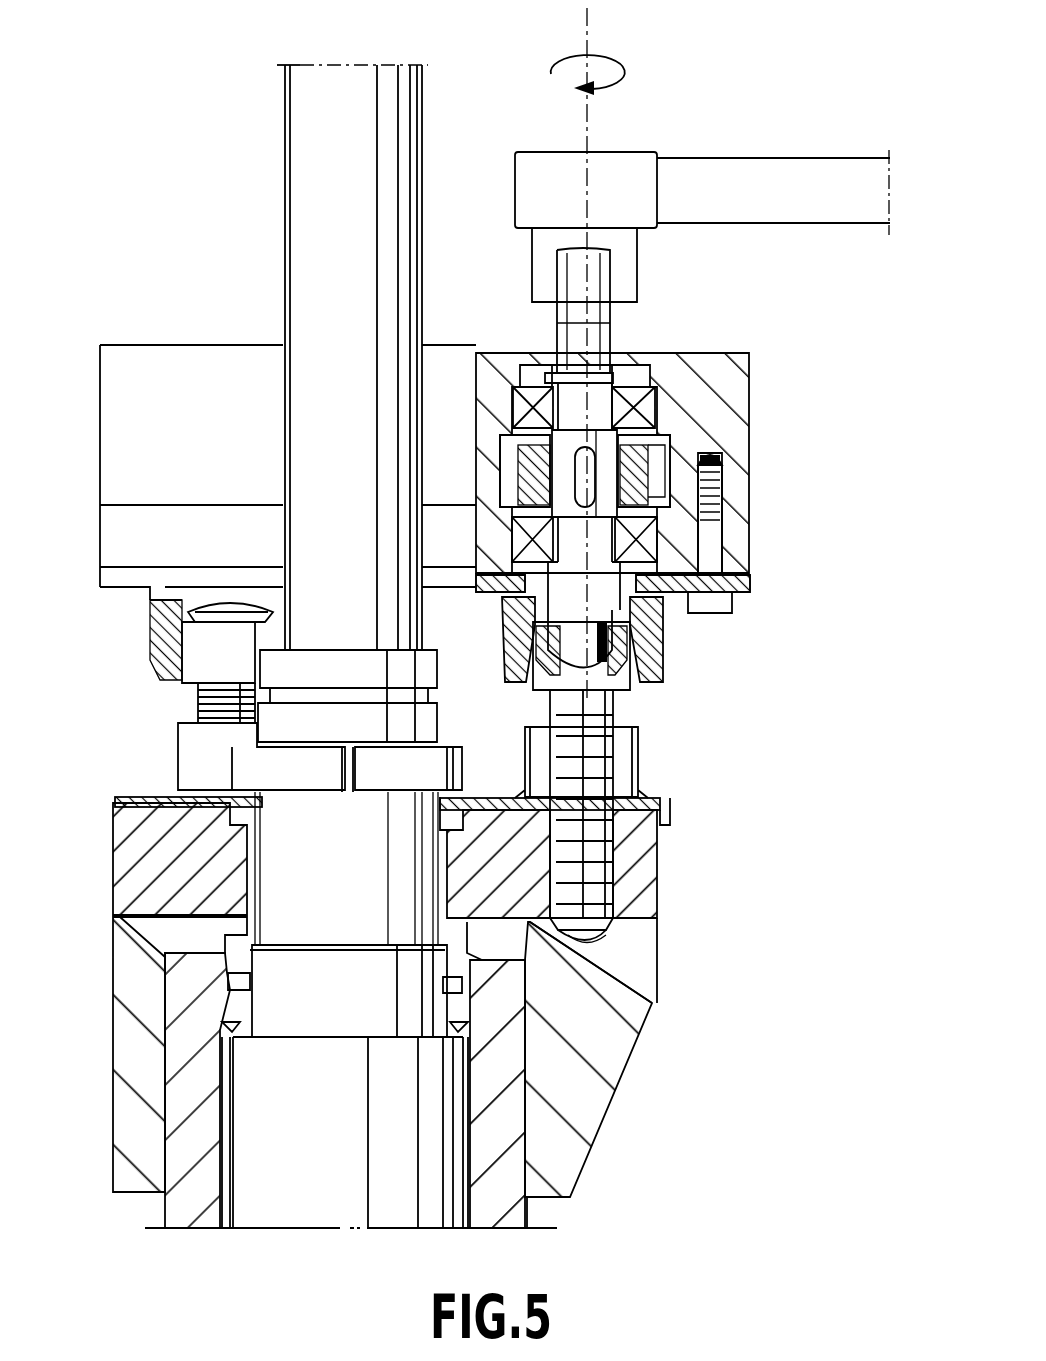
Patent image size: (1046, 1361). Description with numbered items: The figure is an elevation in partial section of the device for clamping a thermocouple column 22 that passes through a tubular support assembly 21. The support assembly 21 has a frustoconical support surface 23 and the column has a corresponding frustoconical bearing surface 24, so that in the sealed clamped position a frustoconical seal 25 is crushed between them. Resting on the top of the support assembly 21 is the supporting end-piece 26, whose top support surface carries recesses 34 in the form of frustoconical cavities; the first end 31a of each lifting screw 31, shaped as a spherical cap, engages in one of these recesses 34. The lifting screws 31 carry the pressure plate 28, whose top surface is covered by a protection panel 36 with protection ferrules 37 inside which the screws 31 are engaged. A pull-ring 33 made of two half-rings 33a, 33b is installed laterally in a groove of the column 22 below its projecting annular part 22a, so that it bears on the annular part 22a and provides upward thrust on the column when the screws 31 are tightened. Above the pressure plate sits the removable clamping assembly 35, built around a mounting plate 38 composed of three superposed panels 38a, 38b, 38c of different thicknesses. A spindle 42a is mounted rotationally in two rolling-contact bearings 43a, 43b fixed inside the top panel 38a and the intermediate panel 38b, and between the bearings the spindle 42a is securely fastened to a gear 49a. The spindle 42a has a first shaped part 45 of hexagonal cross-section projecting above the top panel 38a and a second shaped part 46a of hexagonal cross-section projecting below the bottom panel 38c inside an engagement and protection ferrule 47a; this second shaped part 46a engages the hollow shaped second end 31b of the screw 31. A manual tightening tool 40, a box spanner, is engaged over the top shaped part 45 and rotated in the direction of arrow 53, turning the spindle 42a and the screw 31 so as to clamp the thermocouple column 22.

The arrow 53 is at (612, 53).
The manual tightening tool 40 is at (722, 175).
The first shaped part 45 is at (560, 268).
The thermocouple column 22 is at (300, 128).
The mounting plate 38 is at (116, 410).
The top panel 38a is at (152, 365).
The intermediate panel 38b is at (148, 517).
The bottom panel 38c is at (124, 582).
The removable clamping assembly 35 is at (770, 400).
The rolling-contact bearing 43a is at (537, 365).
The spindle 42a is at (594, 413).
The gear 49a is at (650, 473).
The rolling-contact bearing 43b is at (512, 590).
The engagement and protection ferrule 47a is at (665, 628).
The second shaped part 46a is at (630, 684).
The second end 31b is at (200, 650).
The lifting screw 31 is at (605, 785).
The first end 31a is at (605, 930).
The protection ferrule 37 is at (640, 735).
The projecting annular part 22a is at (298, 715).
The pull-ring 33 is at (325, 802).
The half-ring 33a is at (240, 765).
The half-ring 33b is at (465, 762).
The protection panel 36 is at (120, 795).
The pressure plate 28 is at (645, 880).
The recess 34 is at (562, 932).
The supporting end-piece 26 is at (610, 1063).
The tubular support assembly 21 is at (508, 1177).
The frustoconical support surface 23 is at (235, 1040).
The frustoconical bearing surface 24 is at (248, 985).
The frustoconical seal 25 is at (238, 1028).